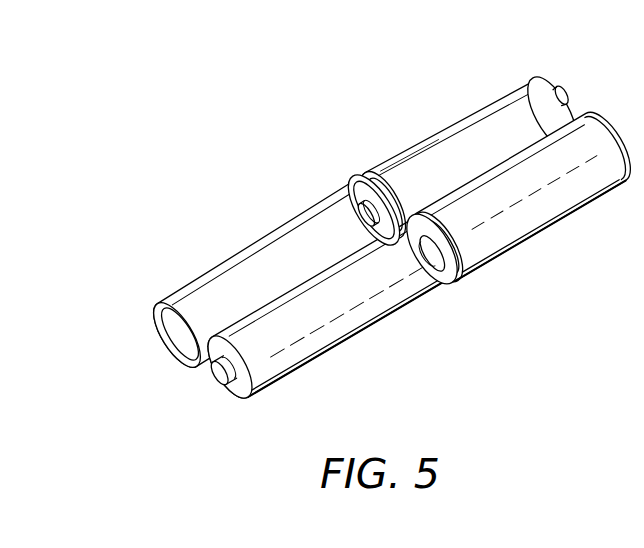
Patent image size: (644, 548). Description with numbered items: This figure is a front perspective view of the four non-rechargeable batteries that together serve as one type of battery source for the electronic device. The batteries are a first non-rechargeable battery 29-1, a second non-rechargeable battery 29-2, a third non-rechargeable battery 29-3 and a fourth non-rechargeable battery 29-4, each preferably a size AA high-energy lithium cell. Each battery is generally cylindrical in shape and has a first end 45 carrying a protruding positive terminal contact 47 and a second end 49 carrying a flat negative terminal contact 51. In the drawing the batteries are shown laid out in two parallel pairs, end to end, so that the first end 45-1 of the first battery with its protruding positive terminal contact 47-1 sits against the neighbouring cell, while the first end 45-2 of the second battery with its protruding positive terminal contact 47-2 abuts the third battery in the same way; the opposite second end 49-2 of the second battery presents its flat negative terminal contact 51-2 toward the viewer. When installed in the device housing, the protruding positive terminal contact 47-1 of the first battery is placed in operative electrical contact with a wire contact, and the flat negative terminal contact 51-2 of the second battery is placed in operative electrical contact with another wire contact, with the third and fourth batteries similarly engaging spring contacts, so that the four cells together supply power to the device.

The first non-rechargeable battery 29-1 is at (352, 311).
The second non-rechargeable battery 29-2 is at (307, 272).
The third non-rechargeable battery 29-3 is at (519, 152).
The fourth non-rechargeable battery 29-4 is at (561, 194).
The first end 45 is at (539, 80).
The first end of first battery 45-1 is at (245, 382).
The first end of second battery 45-2 is at (345, 196).
The protruding positive terminal contact 47 is at (567, 97).
The protruding positive terminal contact of first battery 47-1 is at (225, 381).
The protruding positive terminal contact of second battery 47-2 is at (356, 187).
The second end 49 is at (381, 196).
The second end of second battery 49-2 is at (155, 307).
The flat negative terminal contact 51 is at (371, 192).
The flat negative terminal contact of second battery 51-2 is at (178, 344).